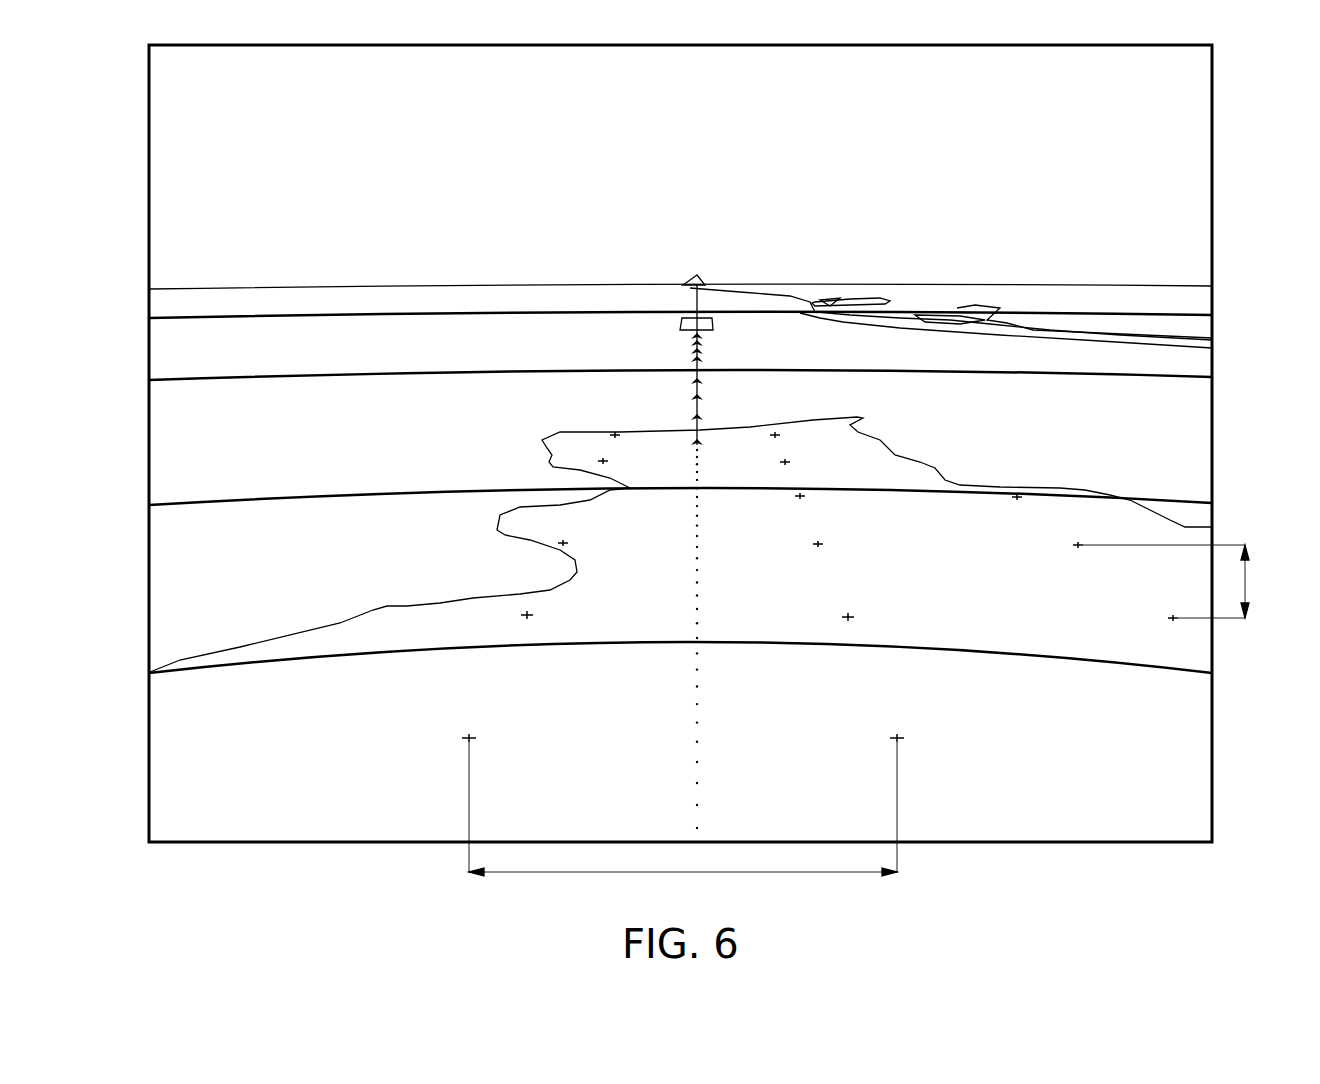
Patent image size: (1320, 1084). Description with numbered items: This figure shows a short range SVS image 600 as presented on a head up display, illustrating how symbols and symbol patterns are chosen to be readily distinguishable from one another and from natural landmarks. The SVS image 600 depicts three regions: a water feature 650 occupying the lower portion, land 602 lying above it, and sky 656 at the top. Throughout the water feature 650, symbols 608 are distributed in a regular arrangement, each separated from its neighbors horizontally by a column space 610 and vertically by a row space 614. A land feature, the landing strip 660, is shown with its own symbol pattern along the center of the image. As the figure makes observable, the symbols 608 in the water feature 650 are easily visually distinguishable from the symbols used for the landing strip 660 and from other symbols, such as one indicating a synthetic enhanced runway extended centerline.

The SVS image 600 is at (1212, 100).
The land 602 is at (733, 371).
The symbols 608 is at (469, 734).
The column space 610 is at (540, 875).
The row space 614 is at (1245, 583).
The water feature 650 is at (168, 780).
The sky 656 is at (1198, 212).
The landing strip 660 is at (710, 308).